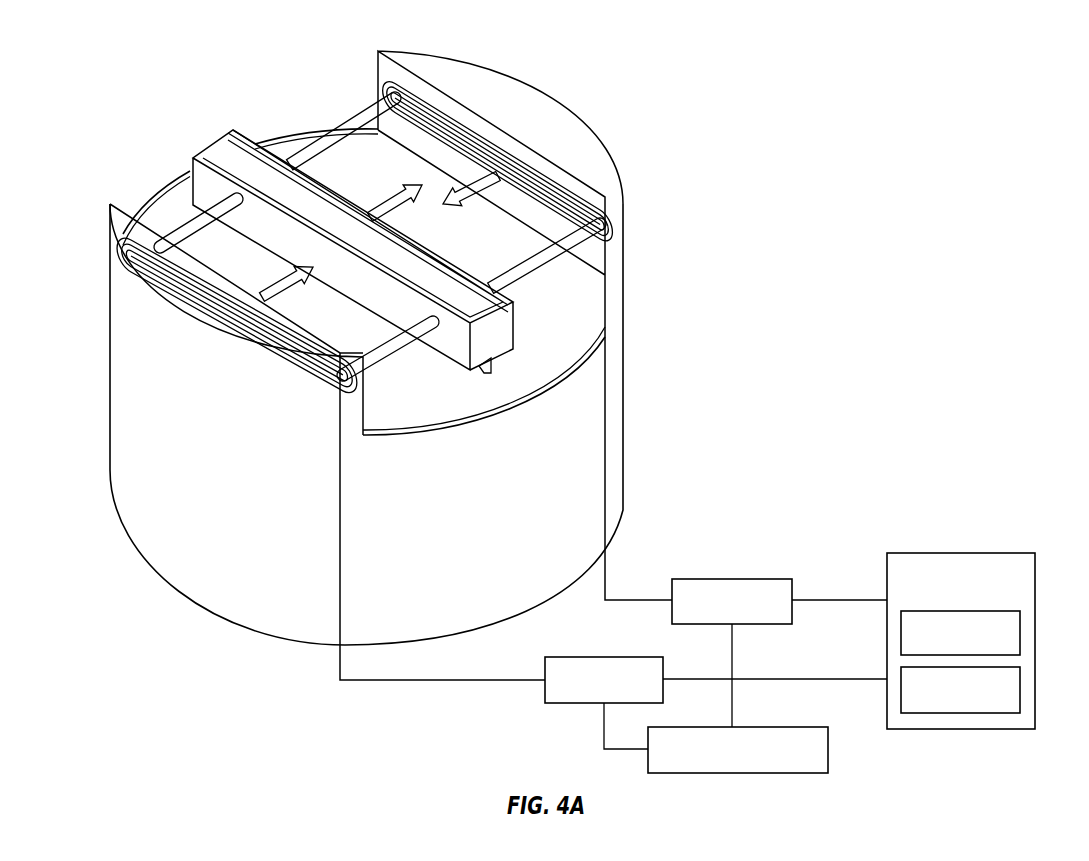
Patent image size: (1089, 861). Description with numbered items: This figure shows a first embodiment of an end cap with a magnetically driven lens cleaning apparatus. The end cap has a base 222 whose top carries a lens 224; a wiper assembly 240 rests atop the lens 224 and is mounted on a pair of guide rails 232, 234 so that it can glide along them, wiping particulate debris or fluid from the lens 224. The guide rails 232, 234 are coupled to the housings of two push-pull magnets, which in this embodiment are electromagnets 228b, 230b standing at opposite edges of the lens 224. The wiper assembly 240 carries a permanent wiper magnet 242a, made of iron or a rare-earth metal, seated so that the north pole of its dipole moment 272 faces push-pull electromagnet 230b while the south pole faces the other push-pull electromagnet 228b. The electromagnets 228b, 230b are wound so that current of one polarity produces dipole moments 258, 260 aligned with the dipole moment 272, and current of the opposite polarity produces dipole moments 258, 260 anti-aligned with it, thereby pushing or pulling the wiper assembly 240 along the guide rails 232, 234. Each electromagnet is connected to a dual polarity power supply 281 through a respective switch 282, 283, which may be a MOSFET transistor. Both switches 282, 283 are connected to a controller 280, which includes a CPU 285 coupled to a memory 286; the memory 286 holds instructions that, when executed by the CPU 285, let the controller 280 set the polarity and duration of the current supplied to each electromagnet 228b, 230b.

The base 222 is at (445, 534).
The lens 224 is at (440, 401).
The push-pull electromagnet 228b is at (110, 262).
The push-pull electromagnet 230b is at (627, 220).
The guide rail 232 is at (527, 268).
The guide rail 234 is at (355, 112).
The wiper assembly 240 is at (193, 157).
The permanent wiper magnet 242a is at (231, 153).
The dipole moment 258 is at (282, 283).
The dipole moment 260 is at (467, 203).
The dipole moment 272 is at (398, 196).
The controller 280 is at (940, 553).
The power supply 281 is at (772, 727).
The switch 282 is at (600, 657).
The switch 283 is at (727, 579).
The CPU 285 is at (1022, 632).
The memory 286 is at (1022, 690).